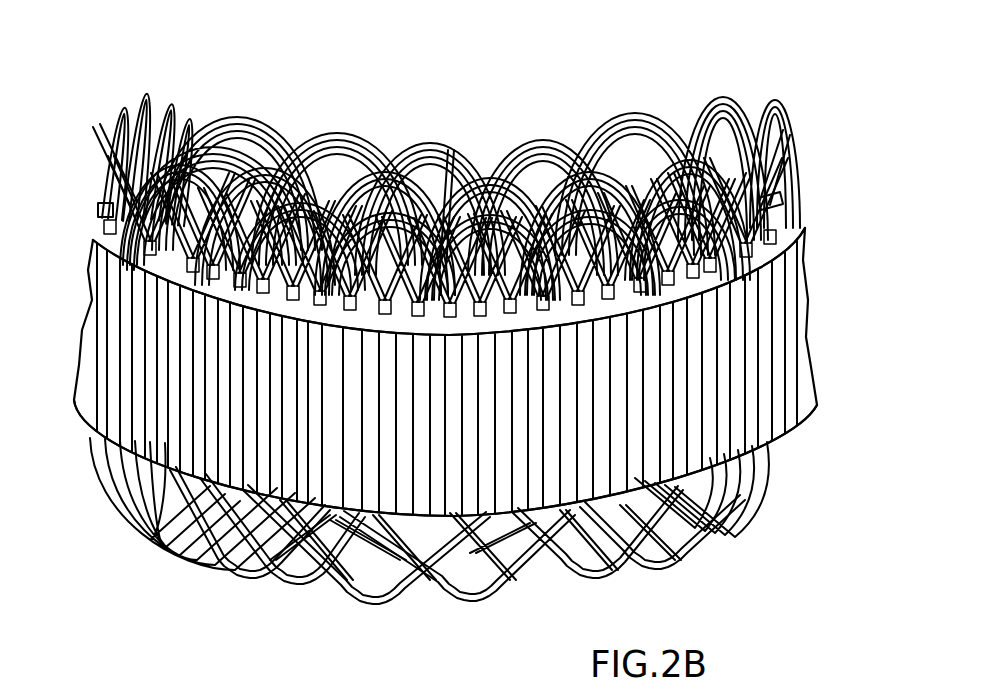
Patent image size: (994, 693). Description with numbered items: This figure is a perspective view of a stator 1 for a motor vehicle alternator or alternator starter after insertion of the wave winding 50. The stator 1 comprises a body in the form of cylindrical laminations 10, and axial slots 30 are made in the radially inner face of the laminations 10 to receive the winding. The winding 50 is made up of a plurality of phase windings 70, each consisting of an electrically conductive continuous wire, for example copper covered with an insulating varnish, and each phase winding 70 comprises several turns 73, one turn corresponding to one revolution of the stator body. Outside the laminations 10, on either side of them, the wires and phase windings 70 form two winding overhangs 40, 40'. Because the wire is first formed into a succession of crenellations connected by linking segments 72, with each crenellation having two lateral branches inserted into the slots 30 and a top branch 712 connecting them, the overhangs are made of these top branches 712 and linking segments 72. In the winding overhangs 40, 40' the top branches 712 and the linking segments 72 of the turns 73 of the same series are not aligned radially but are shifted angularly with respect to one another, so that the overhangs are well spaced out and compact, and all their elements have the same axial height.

The stator 1 is at (100, 100).
The laminations 10 is at (153, 270).
The axial slots 30 is at (462, 215).
The winding overhang 40 is at (470, 519).
The winding overhang 40' is at (450, 167).
The wave winding 50 is at (800, 126).
The phase winding 70 is at (108, 146).
The linking segment 72 is at (373, 615).
The turn 73 is at (193, 147).
The top branch 712 is at (330, 113).